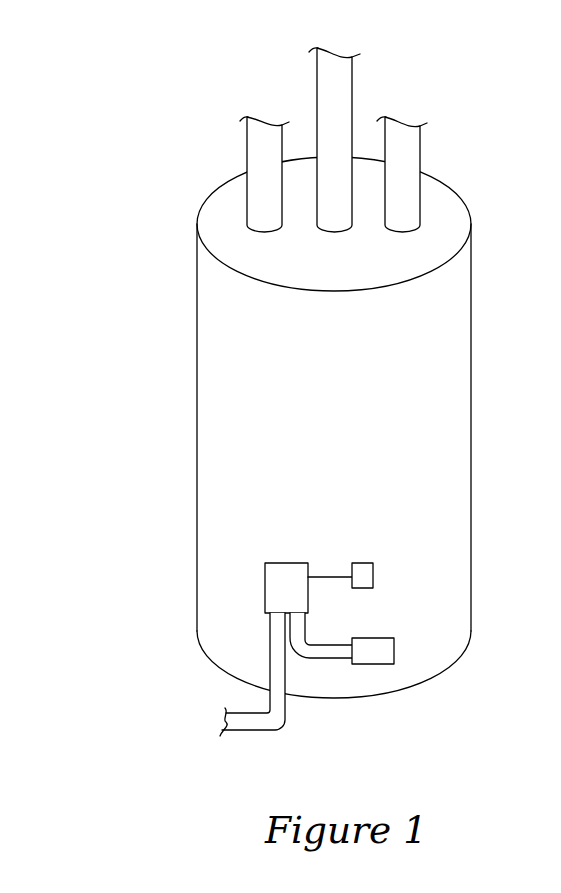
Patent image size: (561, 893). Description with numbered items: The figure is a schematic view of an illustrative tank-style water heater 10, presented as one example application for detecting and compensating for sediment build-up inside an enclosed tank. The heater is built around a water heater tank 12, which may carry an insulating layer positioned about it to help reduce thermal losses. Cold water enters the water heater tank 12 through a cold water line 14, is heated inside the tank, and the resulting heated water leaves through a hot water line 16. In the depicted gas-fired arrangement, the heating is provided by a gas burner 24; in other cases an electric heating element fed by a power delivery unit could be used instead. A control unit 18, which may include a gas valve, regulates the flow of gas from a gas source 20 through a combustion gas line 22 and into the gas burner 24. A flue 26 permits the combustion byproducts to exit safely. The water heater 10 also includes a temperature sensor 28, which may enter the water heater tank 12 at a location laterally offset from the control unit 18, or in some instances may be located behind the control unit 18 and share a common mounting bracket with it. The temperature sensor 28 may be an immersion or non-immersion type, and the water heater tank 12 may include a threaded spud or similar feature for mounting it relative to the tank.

The tank-style water heater 10 is at (120, 222).
The water heater tank 12 is at (213, 435).
The cold water line 14 is at (253, 149).
The hot water line 16 is at (407, 147).
The control unit 18 is at (287, 570).
The gas source 20 is at (272, 720).
The combustion gas line 22 is at (325, 653).
The gas burner 24 is at (383, 643).
The flue 26 is at (337, 79).
The temperature sensor 28 is at (363, 568).